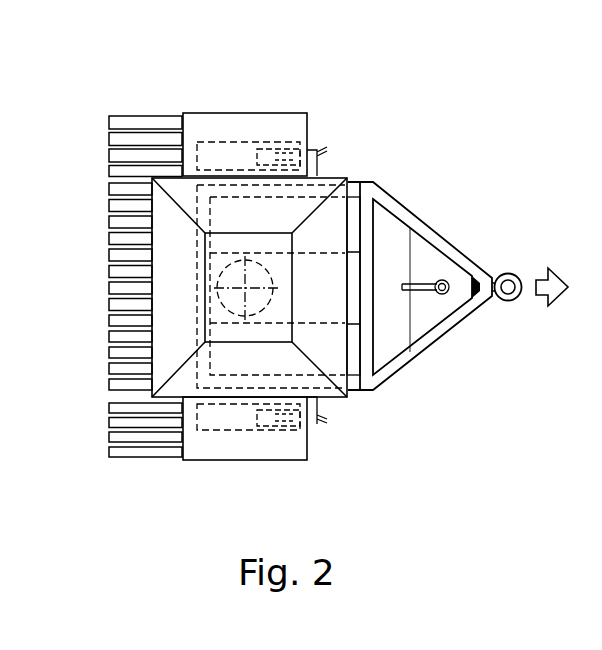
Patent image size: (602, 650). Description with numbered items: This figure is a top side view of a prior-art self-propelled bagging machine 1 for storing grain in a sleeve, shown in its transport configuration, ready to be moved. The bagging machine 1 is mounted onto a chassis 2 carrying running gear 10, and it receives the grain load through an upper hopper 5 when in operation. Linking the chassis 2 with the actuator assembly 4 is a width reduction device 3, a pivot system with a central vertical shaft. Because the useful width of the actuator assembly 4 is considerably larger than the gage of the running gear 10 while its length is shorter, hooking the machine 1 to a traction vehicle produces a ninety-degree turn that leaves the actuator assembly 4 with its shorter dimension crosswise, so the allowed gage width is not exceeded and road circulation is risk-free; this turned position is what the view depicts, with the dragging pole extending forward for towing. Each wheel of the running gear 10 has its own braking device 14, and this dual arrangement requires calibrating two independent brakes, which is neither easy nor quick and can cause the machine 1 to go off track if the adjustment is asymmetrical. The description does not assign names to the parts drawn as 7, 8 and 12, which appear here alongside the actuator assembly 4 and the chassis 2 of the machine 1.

The bagging machine 1 is at (330, 117).
The chassis 2 is at (385, 192).
The width reduction device 3 is at (262, 281).
The actuator assembly 4 is at (240, 113).
The upper hopper 5 is at (337, 176).
The heat exchanger body 7 is at (95, 266).
The cooling fins 8 is at (110, 118).
The running gear 10 is at (220, 428).
The locking pin 12 is at (423, 283).
The braking device 14 is at (290, 432).